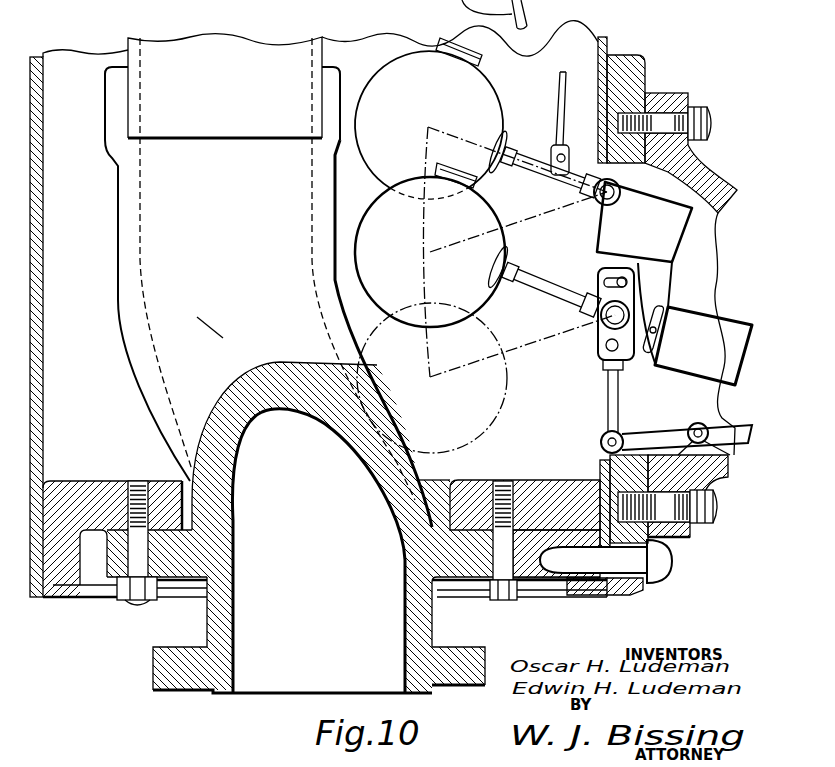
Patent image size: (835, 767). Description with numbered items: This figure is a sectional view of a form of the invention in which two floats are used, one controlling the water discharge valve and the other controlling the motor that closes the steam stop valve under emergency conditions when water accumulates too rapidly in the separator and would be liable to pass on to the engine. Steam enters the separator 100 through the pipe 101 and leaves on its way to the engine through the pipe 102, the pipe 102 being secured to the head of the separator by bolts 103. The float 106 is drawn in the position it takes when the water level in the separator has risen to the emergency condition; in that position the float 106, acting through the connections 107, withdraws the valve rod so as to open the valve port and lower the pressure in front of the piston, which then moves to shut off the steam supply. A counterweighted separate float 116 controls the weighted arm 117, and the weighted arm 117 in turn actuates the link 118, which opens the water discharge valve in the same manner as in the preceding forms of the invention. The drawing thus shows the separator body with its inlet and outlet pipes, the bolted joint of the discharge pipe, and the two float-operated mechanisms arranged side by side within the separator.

The separator 100 is at (70, 66).
The pipe 101 is at (195, 53).
The pipe 102 is at (165, 402).
The bolts 103 is at (138, 543).
The float 106 is at (468, 90).
The connections 107 is at (560, 92).
The counterweighted separate float 116 is at (440, 315).
The weighted arm 117 is at (650, 240).
The link 118 is at (598, 340).